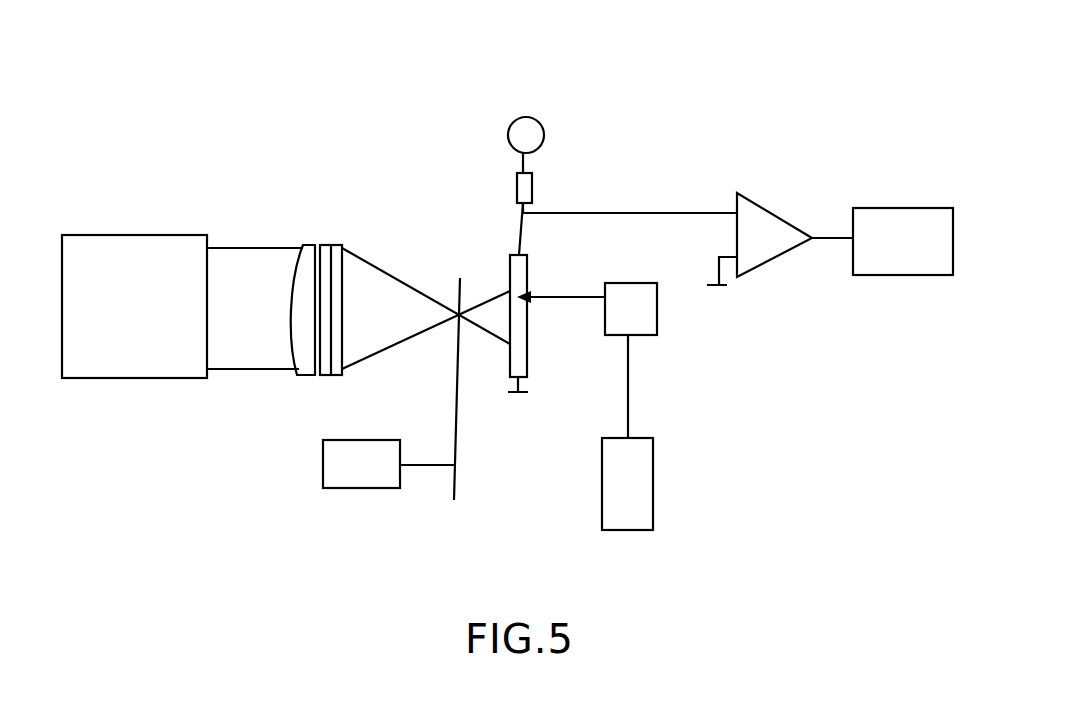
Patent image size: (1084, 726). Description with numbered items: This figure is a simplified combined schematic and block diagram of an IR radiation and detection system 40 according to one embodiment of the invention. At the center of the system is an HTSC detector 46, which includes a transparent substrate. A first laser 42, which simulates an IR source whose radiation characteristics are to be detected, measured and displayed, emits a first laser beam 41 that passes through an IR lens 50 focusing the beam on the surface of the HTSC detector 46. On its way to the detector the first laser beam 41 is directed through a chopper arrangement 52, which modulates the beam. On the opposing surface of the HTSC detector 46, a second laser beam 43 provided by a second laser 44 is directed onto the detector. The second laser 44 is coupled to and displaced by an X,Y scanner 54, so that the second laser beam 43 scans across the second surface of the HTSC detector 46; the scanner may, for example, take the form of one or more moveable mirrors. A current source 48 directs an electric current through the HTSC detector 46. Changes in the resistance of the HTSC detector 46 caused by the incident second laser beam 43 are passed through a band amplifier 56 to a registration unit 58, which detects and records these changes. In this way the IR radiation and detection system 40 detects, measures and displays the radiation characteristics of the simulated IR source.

The IR radiation and detection system 40 is at (438, 137).
The first laser beam 41 is at (238, 275).
The first laser 42 is at (186, 367).
The second laser beam 43 is at (545, 299).
The second laser 44 is at (641, 506).
The HTSC detector 46 is at (515, 262).
The current source 48 is at (522, 128).
The IR lens 50 is at (312, 247).
The chopper arrangement 52 is at (378, 480).
The X,Y scanner 54 is at (645, 328).
The band amplifier 56 is at (778, 252).
The registration unit 58 is at (910, 254).